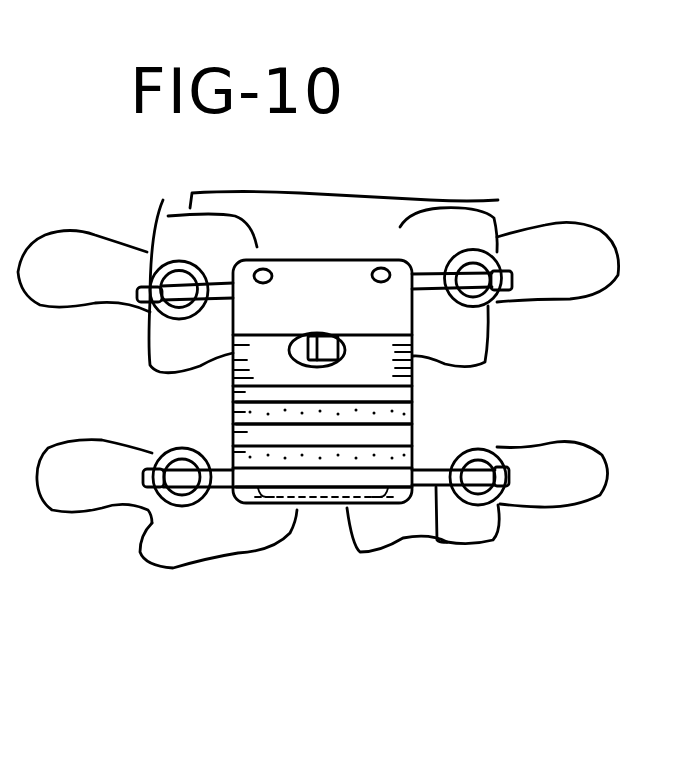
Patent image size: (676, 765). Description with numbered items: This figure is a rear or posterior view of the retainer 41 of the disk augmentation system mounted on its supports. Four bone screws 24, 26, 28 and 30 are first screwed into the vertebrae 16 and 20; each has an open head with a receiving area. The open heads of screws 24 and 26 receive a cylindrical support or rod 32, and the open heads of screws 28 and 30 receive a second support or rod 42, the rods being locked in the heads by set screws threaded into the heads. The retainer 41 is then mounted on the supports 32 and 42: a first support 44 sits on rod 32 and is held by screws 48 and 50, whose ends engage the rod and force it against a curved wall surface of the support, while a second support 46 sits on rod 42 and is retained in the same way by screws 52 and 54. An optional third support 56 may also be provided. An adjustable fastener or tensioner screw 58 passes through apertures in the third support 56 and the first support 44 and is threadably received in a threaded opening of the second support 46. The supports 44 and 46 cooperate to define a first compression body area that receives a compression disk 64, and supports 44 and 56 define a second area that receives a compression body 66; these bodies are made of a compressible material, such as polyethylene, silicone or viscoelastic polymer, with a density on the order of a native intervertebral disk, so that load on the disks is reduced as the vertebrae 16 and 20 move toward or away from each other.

The vertebra 16 is at (478, 325).
The vertebra 20 is at (537, 462).
The screw 24 is at (477, 250).
The screw 26 is at (315, 265).
The screw 28 is at (500, 498).
The screw 30 is at (152, 447).
The support 32 is at (437, 268).
The retainer 41 is at (330, 508).
The support 42 is at (438, 540).
The first support 44 is at (413, 430).
The second support 46 is at (304, 490).
The screw 48 is at (267, 268).
The screw 50 is at (382, 267).
The screw 52 is at (265, 492).
The screw 54 is at (385, 505).
The third support 56 is at (237, 353).
The adjustable fastener 58 is at (317, 334).
The compression disk 64 is at (267, 458).
The compression body 66 is at (413, 404).